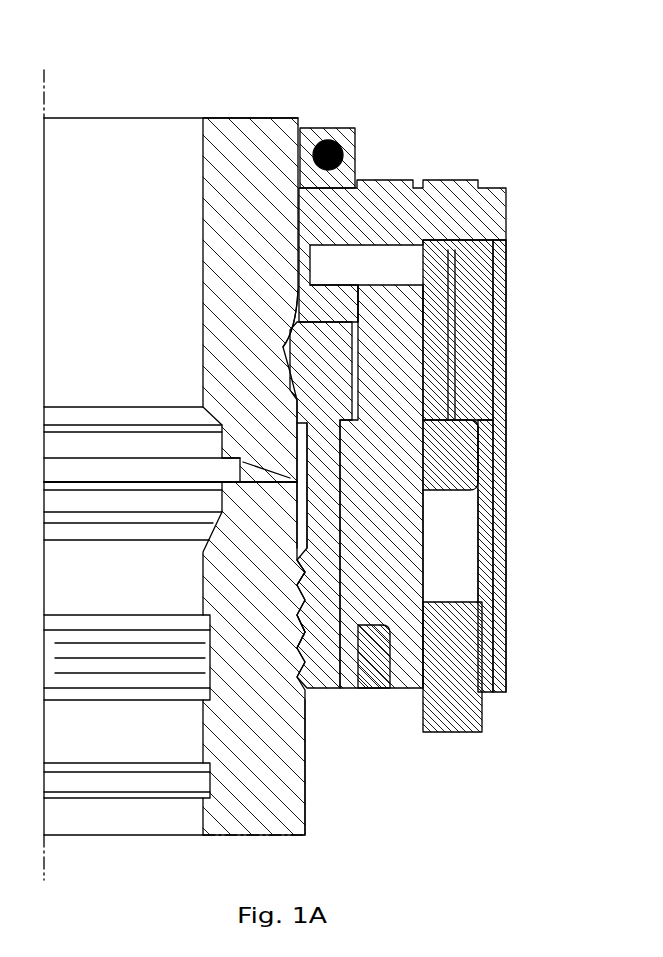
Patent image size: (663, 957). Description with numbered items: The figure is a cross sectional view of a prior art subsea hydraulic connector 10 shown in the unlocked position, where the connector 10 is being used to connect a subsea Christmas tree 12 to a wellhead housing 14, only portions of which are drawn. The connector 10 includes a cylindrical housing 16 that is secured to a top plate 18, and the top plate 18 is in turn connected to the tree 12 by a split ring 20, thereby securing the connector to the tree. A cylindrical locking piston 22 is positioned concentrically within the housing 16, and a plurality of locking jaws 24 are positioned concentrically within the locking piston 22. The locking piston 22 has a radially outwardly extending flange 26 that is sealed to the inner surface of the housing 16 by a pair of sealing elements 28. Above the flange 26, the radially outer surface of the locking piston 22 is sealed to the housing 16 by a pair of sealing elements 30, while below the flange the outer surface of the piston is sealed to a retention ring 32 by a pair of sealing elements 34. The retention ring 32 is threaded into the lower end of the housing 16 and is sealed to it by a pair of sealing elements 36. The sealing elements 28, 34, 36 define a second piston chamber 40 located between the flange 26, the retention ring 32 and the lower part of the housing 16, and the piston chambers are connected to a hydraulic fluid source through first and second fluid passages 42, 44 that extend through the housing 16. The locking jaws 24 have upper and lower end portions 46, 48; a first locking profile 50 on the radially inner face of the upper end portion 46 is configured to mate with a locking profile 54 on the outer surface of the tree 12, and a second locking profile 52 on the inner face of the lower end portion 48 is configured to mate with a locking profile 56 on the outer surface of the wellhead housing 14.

The connector 10 is at (457, 122).
The subsea Christmas tree 12 is at (257, 128).
The wellhead housing 14 is at (305, 812).
The cylindrical housing 16 is at (506, 262).
The top plate 18 is at (506, 190).
The split ring 20 is at (332, 130).
The cylindrical locking piston 22 is at (390, 283).
The locking jaws 24 is at (300, 518).
The radially outwardly extending flange 26 is at (465, 490).
The sealing elements 28 is at (478, 467).
The sealing elements 30 is at (425, 323).
The retention ring 32 is at (483, 710).
The sealing elements 34 is at (408, 630).
The sealing elements 36 is at (478, 627).
The second piston chamber 40 is at (465, 565).
The first fluid passage 42 is at (455, 355).
The second fluid passage 44 is at (498, 395).
The upper end portion 46 is at (290, 372).
The lower end portion 48 is at (315, 590).
The first locking profile 50 is at (283, 345).
The second locking profile 52 is at (297, 615).
The locking profile 54 is at (283, 345).
The locking profile 56 is at (308, 605).